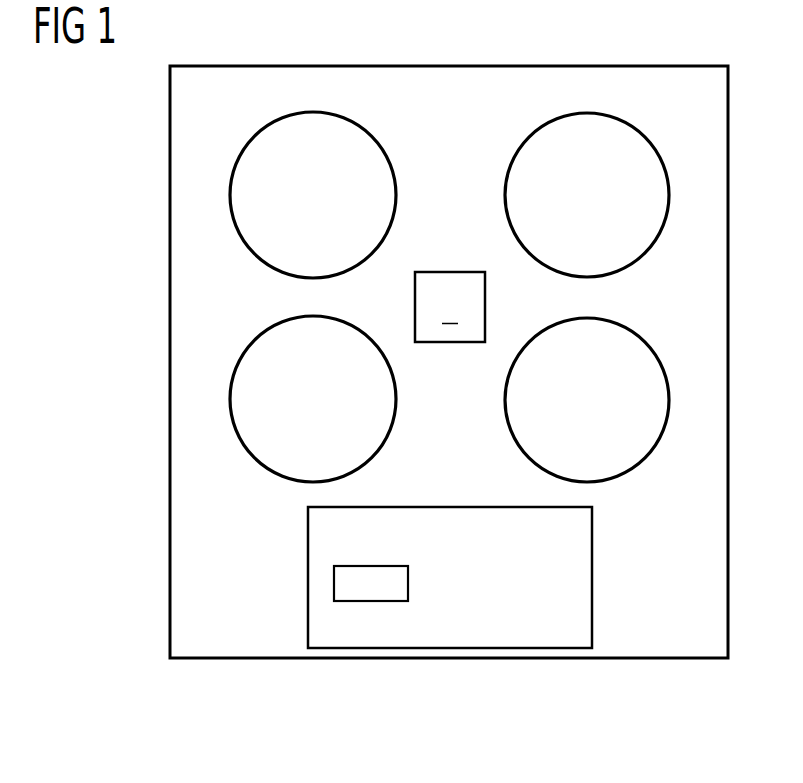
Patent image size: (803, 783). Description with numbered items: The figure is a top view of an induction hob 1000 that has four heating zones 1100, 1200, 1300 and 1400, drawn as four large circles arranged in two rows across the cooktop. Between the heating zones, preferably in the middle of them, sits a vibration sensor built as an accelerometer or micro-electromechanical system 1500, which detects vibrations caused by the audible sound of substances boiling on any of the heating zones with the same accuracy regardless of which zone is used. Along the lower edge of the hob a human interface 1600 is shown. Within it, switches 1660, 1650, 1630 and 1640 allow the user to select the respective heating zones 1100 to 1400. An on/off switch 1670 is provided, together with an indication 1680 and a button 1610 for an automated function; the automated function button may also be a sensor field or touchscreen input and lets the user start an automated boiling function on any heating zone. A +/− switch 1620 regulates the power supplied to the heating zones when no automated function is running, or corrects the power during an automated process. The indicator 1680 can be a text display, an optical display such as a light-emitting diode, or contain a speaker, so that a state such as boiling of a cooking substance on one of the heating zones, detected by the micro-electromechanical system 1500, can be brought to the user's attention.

The induction hob 1000 is at (170, 353).
The heating zone 1100 is at (287, 113).
The heating zone 1200 is at (613, 113).
The heating zone 1300 is at (615, 320).
The heating zone 1400 is at (288, 320).
The micro-electromechanical system 1500 is at (450, 272).
The human interface 1600 is at (547, 650).
The automated function switch 1610 is at (362, 638).
The +/− switch 1620 is at (431, 638).
The selector for heating zone 1630 is at (476, 638).
The selector for heating zone 1640 is at (552, 621).
The selector for heating zone 1650 is at (552, 547).
The selector for heating zone 1660 is at (460, 540).
The on/off switch 1670 is at (331, 548).
The indicator 1680 is at (331, 585).